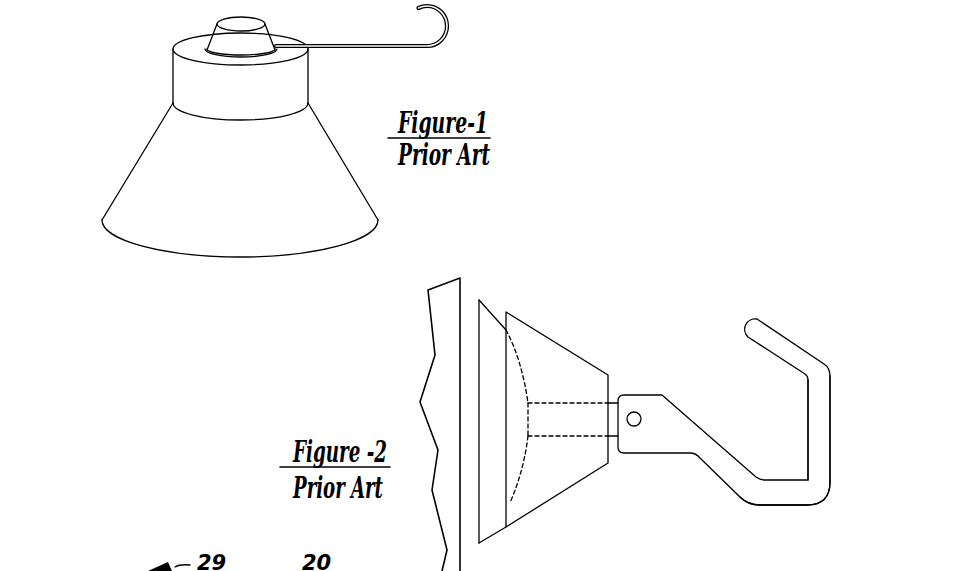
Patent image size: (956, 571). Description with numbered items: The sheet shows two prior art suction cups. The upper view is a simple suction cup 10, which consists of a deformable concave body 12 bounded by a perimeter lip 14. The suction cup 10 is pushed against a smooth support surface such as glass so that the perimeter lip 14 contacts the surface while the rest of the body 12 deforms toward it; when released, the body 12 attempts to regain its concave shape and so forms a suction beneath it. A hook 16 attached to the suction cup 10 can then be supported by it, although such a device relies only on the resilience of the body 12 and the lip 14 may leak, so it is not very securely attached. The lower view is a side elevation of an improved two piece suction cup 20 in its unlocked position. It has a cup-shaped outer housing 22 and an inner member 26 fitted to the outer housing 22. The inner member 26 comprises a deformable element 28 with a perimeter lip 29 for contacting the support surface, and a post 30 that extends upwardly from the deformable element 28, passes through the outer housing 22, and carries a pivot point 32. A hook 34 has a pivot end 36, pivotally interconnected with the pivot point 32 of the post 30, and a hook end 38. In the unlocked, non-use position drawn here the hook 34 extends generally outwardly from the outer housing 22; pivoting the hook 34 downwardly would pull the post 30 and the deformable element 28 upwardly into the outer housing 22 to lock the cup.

In FIG. 1, the suction cup 10 is at (104, 95).
In FIG. 1, the deformable concave body 12 is at (130, 190).
In FIG. 1, the perimeter lip 14 is at (370, 237).
In FIG. 1, the hook 16 is at (424, 50).
In FIG. 2, the suction cup 20 is at (658, 302).
In FIG. 2, the cup-shaped outer housing 22 is at (600, 368).
In FIG. 2, the inner member 26 is at (495, 537).
In FIG. 2, the deformable element 28 is at (519, 357).
In FIG. 2, the perimeter lip 29 is at (474, 300).
In FIG. 2, the post 30 is at (558, 433).
In FIG. 2, the pivot point 32 is at (641, 412).
In FIG. 2, the hook 34 is at (796, 506).
In FIG. 2, the pivot end 36 is at (660, 447).
In FIG. 2, the hook end 38 is at (822, 437).